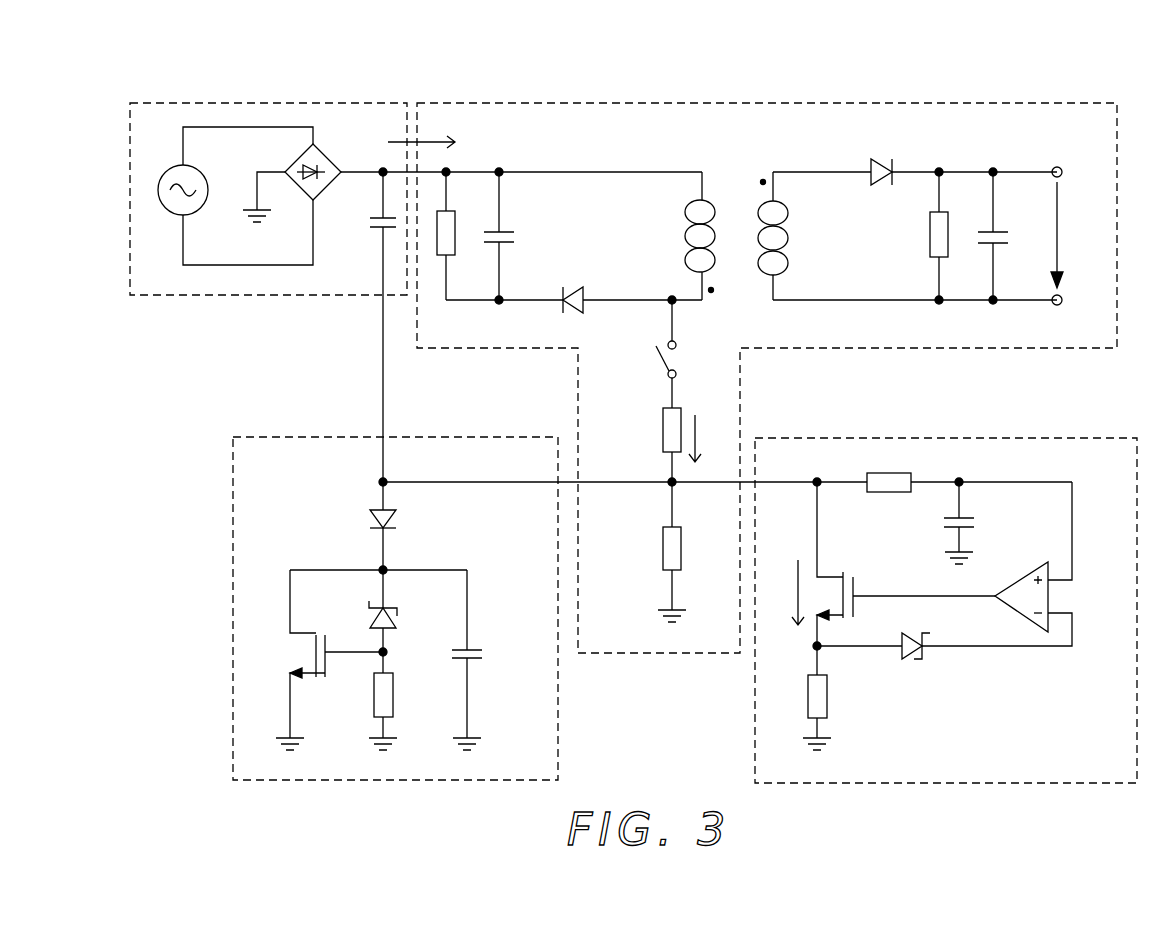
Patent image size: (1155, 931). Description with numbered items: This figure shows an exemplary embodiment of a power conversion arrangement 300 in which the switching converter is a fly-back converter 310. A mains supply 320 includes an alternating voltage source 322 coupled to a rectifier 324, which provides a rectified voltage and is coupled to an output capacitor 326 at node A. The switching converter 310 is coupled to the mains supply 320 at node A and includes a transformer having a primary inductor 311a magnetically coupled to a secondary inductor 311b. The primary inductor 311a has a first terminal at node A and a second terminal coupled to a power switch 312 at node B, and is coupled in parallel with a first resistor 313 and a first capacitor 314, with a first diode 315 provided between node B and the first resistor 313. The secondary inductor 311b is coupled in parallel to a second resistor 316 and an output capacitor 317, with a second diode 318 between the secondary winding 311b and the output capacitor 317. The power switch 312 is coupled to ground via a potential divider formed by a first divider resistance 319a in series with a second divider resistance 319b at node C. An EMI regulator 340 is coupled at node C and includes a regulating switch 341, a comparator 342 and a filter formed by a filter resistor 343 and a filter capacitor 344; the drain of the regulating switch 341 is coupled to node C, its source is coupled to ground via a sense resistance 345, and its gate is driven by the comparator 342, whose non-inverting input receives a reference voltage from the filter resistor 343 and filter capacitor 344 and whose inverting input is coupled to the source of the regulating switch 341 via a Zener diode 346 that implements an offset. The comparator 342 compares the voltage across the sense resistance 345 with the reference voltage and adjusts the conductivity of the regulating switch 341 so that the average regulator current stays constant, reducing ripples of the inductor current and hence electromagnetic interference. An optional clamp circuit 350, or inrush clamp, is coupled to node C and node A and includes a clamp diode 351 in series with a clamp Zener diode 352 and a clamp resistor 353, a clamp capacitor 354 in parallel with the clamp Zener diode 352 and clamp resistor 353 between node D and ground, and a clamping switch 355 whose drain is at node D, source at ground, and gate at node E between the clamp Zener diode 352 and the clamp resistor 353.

The power converter system 300 is at (166, 48).
The fly-back converter 310 is at (1058, 103).
The primary inductor 311a is at (686, 222).
The secondary inductor 311b is at (790, 222).
The power switch S1 312 is at (655, 350).
The first resistor 313 is at (455, 245).
The first capacitor 314 is at (518, 228).
The first diode 315 is at (566, 290).
The second resistor 316 is at (931, 252).
The output capacitor 317 is at (1010, 229).
The second diode 318 is at (884, 160).
The resistance R2 319a is at (662, 415).
The resistance R3 319b is at (681, 556).
The mains supply 320 is at (190, 103).
The alternating voltage source 322 is at (166, 205).
The rectifier 324 is at (328, 156).
The output capacitor 326 is at (369, 222).
The EMI regulator 340 is at (1075, 438).
The switch M2 341 is at (837, 567).
The comparator U1 342 is at (1020, 622).
The resistor R4 343 is at (878, 473).
The capacitor C2 344 is at (974, 529).
The resistance R5 345 is at (808, 700).
The Zener diode 346 is at (930, 651).
The clamp circuit 350 is at (290, 437).
The diode D1 351 is at (358, 524).
The Zener diode Z1 352 is at (388, 606).
The resistor R1 353 is at (374, 700).
The capacitor C1 354 is at (479, 665).
The clamping switch M1 355 is at (280, 665).